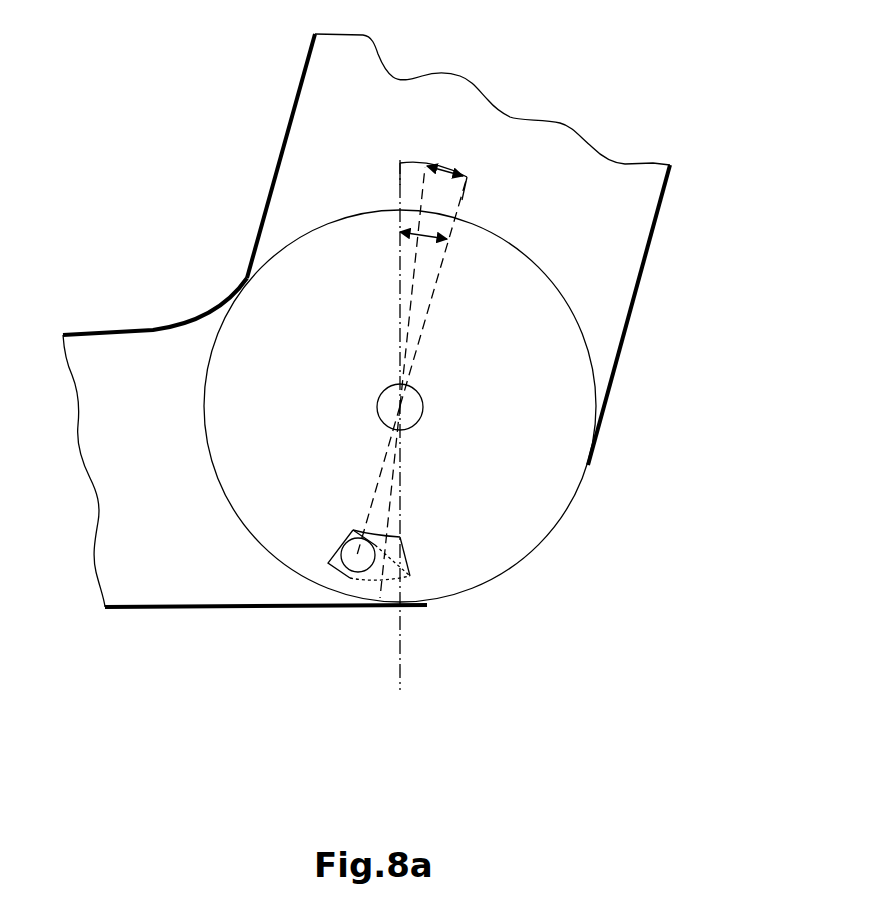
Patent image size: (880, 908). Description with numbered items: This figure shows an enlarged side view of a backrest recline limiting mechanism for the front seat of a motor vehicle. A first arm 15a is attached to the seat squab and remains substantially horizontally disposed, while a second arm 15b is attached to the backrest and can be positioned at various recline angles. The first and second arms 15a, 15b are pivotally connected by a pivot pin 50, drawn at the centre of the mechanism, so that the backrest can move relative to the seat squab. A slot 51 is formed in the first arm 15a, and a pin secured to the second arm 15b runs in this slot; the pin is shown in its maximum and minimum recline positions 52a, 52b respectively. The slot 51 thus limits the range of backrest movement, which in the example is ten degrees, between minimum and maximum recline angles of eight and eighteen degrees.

The first arm 15a is at (145, 328).
The second arm 15b is at (650, 247).
The pivot pin 50 is at (378, 400).
The slot 51 is at (345, 540).
The pin in maximum recline position 52a is at (345, 566).
The pin in minimum recline position 52b is at (400, 573).